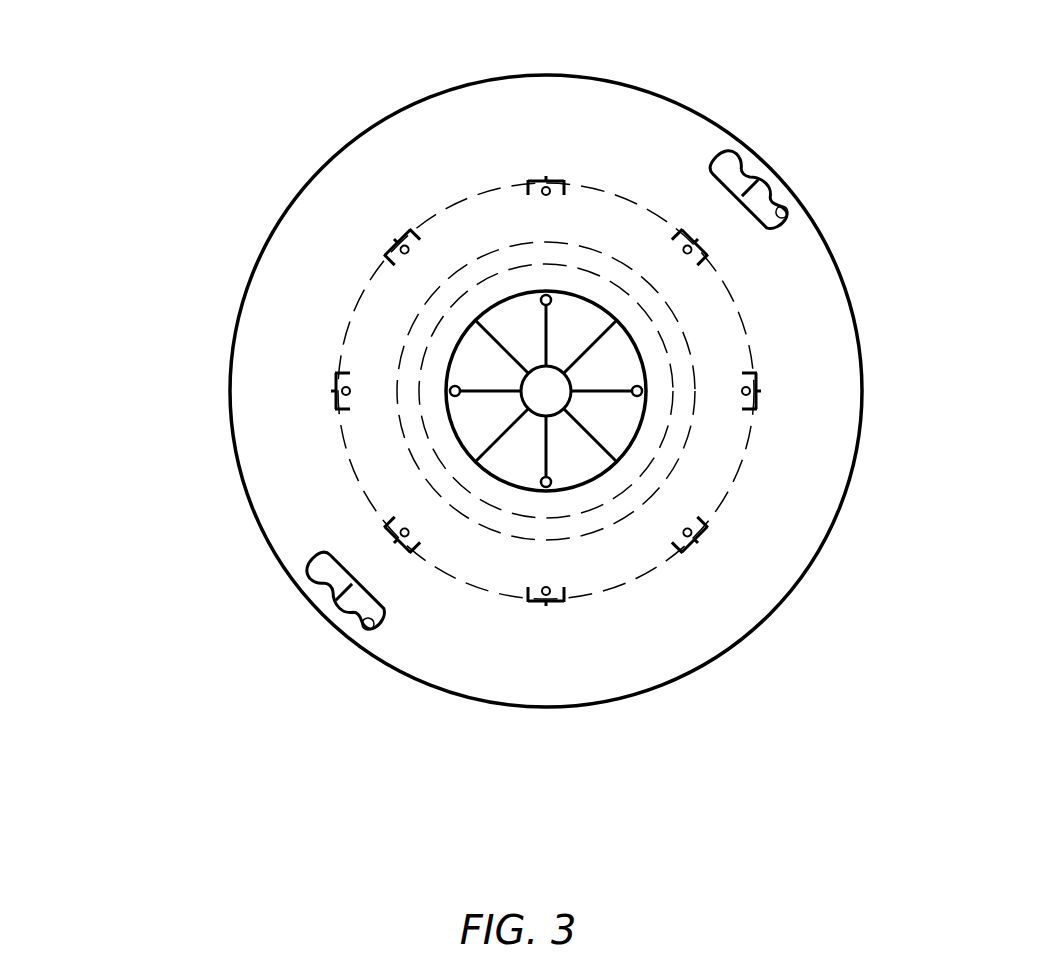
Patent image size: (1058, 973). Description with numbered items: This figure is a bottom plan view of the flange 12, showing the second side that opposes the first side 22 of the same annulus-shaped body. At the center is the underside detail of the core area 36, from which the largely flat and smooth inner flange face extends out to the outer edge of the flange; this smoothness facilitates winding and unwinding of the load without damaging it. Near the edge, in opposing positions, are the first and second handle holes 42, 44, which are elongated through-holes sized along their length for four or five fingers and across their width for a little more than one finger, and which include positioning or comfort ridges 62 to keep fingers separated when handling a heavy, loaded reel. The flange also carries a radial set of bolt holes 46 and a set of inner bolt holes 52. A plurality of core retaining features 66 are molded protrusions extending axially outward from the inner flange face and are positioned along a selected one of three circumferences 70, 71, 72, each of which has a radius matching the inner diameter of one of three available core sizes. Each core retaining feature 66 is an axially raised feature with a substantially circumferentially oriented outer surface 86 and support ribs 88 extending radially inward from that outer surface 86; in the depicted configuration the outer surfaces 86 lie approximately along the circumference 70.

The flange 12 is at (136, 538).
The first side 22 is at (196, 603).
The core area 36 is at (618, 360).
The first handle hole 42 is at (388, 628).
The second handle hole 44 is at (793, 223).
The radial set of bolt holes 46 is at (560, 185).
The set of inner bolt holes 52 is at (545, 480).
The positioning or comfort ridges 62 is at (773, 196).
The core retaining features 66 is at (569, 149).
The circumference 70 is at (663, 568).
The circumference 71 is at (615, 523).
The circumference 72 is at (578, 518).
The outer surface 86 is at (528, 183).
The support ribs 88 is at (347, 345).